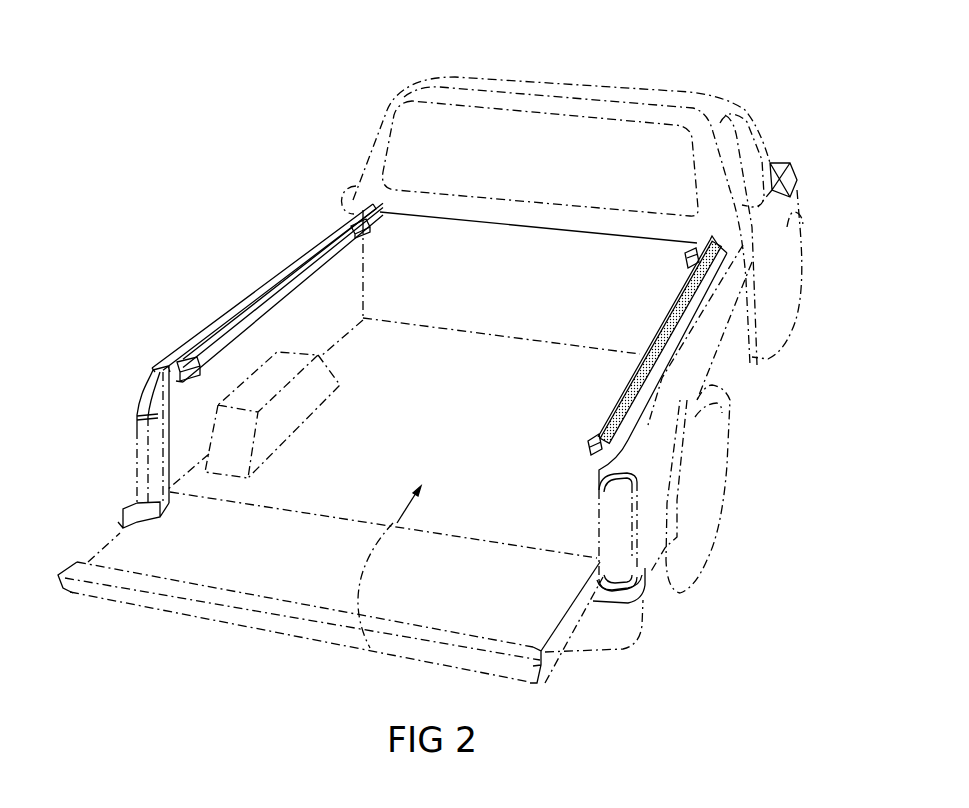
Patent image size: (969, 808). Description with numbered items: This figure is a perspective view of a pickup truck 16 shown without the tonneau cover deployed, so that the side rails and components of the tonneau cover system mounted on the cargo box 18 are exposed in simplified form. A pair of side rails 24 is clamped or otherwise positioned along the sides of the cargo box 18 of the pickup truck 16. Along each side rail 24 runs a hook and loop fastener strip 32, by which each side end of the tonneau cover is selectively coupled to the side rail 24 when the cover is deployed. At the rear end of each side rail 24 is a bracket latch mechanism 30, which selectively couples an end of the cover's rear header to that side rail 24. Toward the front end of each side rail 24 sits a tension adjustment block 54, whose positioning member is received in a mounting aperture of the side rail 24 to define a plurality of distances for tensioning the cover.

The pickup truck 16 is at (606, 76).
The cargo box 18 is at (370, 647).
The side rails 24 is at (262, 304).
The bracket latch mechanism 30 is at (188, 352).
The hook and loop fastener strip 32 is at (288, 268).
The tension adjustment block 54 is at (353, 207).